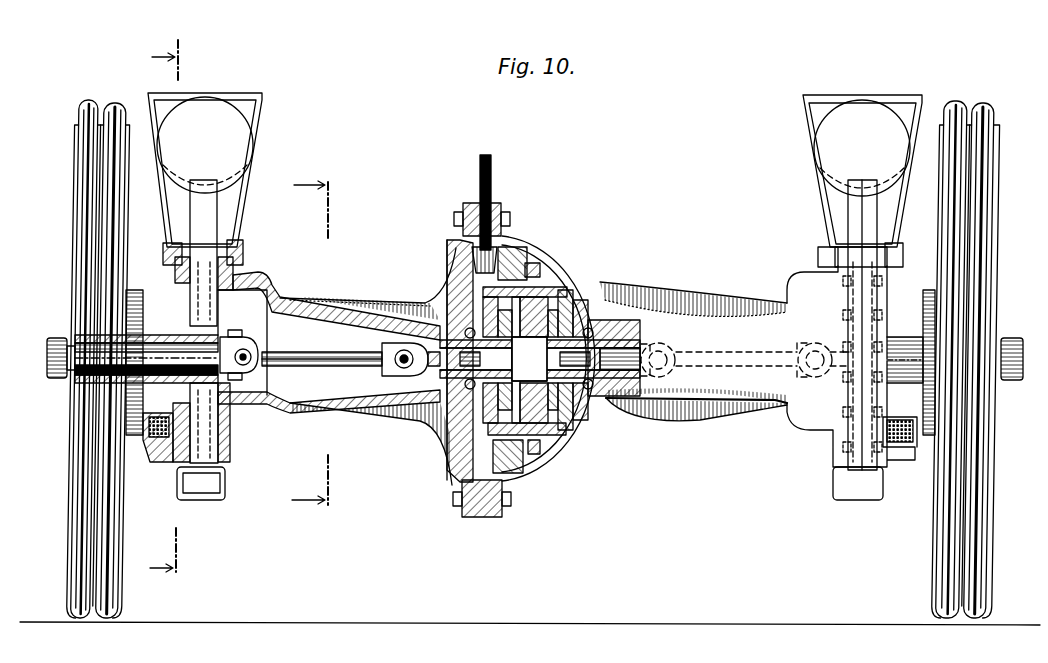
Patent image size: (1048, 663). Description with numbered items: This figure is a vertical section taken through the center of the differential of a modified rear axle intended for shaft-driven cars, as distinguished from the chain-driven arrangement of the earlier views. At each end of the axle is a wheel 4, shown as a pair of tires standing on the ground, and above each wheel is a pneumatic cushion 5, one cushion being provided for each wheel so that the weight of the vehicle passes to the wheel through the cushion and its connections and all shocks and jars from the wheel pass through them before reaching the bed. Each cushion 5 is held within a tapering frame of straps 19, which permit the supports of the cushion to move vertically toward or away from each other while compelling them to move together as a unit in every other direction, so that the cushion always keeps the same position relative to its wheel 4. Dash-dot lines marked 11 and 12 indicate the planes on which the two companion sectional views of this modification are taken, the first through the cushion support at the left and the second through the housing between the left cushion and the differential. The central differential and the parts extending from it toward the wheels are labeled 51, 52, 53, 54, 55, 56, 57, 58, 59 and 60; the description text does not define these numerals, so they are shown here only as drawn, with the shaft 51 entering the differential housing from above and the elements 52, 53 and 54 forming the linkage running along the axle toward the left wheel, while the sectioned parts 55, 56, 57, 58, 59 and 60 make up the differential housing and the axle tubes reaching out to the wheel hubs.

The wheel 4 is at (82, 236).
The pneumatic cushion 5 is at (230, 135).
The section line 11— 11 is at (170, 308).
The section line 12— 12 is at (318, 349).
The straps 19 is at (247, 223).
The drive shaft 51 is at (494, 174).
The connecting link 52 is at (340, 357).
The clevis 53 is at (403, 380).
The bracket 54 is at (250, 344).
The differential housing cover 55 is at (523, 238).
The differential case 56 is at (540, 270).
The ring gear 57 is at (590, 293).
The bearing flange 58 is at (577, 300).
The axle tube 59 is at (453, 457).
The axle housing 60 is at (424, 320).